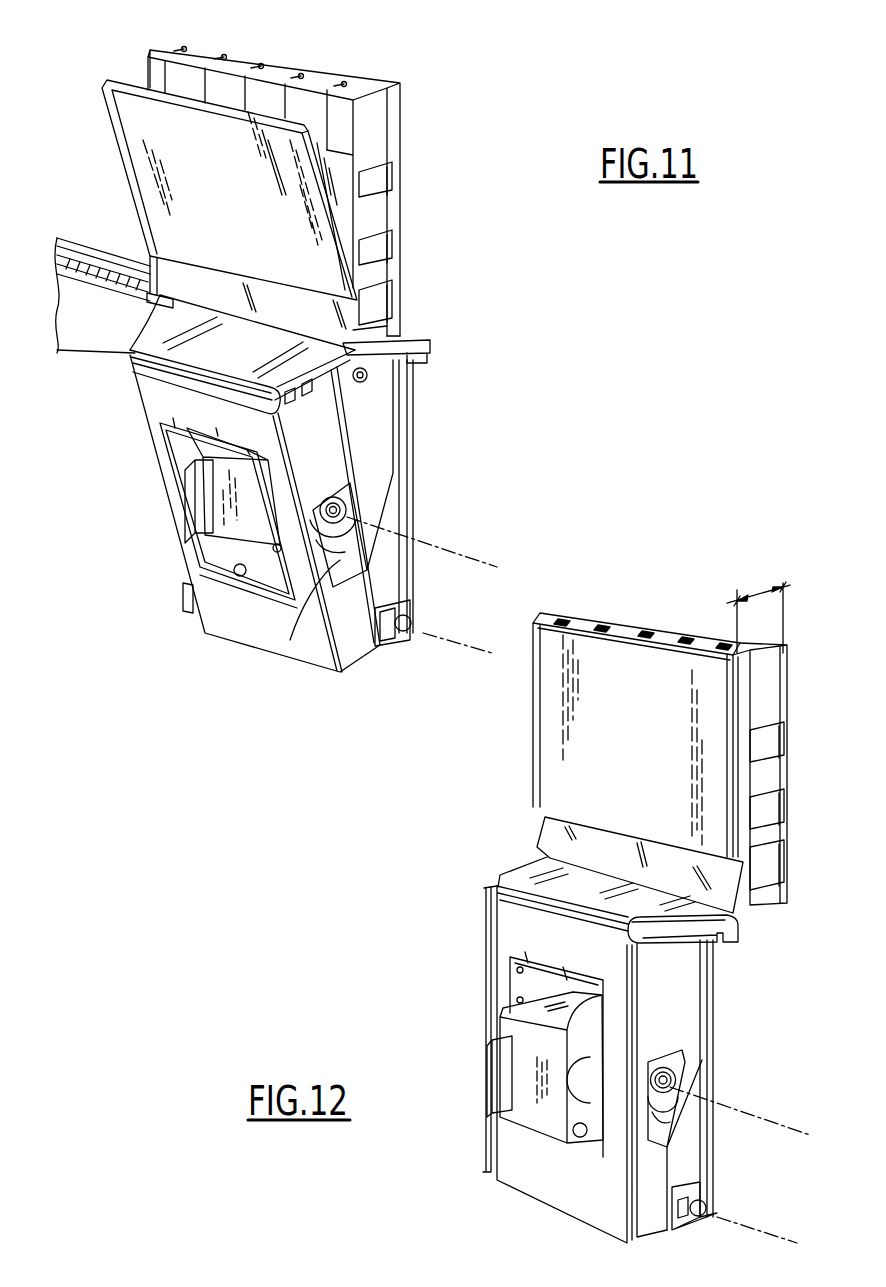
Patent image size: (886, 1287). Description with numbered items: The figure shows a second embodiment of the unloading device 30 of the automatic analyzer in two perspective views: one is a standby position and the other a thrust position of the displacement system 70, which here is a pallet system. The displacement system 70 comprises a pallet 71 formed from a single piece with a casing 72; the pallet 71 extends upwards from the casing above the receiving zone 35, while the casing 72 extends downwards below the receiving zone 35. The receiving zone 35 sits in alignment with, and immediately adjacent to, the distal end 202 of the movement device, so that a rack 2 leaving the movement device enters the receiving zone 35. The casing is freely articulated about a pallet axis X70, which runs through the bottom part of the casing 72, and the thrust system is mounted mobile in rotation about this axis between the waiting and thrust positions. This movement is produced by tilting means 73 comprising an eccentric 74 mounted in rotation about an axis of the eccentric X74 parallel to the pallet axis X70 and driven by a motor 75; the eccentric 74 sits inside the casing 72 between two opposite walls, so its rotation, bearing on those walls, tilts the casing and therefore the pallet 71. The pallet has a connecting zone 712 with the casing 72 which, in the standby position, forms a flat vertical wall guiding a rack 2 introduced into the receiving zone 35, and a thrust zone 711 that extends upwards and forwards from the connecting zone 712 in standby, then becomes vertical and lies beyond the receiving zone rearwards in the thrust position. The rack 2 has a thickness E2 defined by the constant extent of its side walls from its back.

In FIG. 11, the rack 2 is at (392, 110).
In FIG. 12, the rack 2 is at (760, 774).
In FIG. 11, the unloading device 30 is at (438, 270).
In FIG. 12, the unloading device 30 is at (690, 588).
In FIG. 11, the receiving zone 35 is at (403, 333).
In FIG. 12, the receiving zone 35 is at (718, 938).
In FIG. 11, the displacement system 70 is at (170, 145).
In FIG. 12, the displacement system 70 is at (531, 701).
In FIG. 11, the pallet 71 is at (272, 218).
In FIG. 12, the pallet 71 is at (610, 667).
In FIG. 11, the thrust zone 711 is at (262, 157).
In FIG. 12, the thrust zone 711 is at (663, 672).
In FIG. 11, the connecting zone 712 is at (200, 287).
In FIG. 11, the casing 72 is at (242, 617).
In FIG. 12, the casing 72 is at (517, 1152).
In FIG. 11, the tilting means 73 is at (243, 511).
In FIG. 12, the tilting means 73 is at (534, 1061).
In FIG. 11, the eccentric 74 is at (342, 553).
In FIG. 12, the eccentric 74 is at (660, 1118).
In FIG. 11, the motor 75 is at (207, 490).
In FIG. 12, the motor 75 is at (510, 1013).
In FIG. 11, the distal end 202 is at (107, 337).
In FIG. 11, the axis of the eccentric X74 is at (473, 556).
In FIG. 12, the axis of the eccentric X74 is at (777, 1118).
In FIG. 11, the pallet axis X70 is at (473, 648).
In FIG. 12, the pallet axis X70 is at (773, 1235).
In FIG. 12, the thickness E2 is at (758, 606).